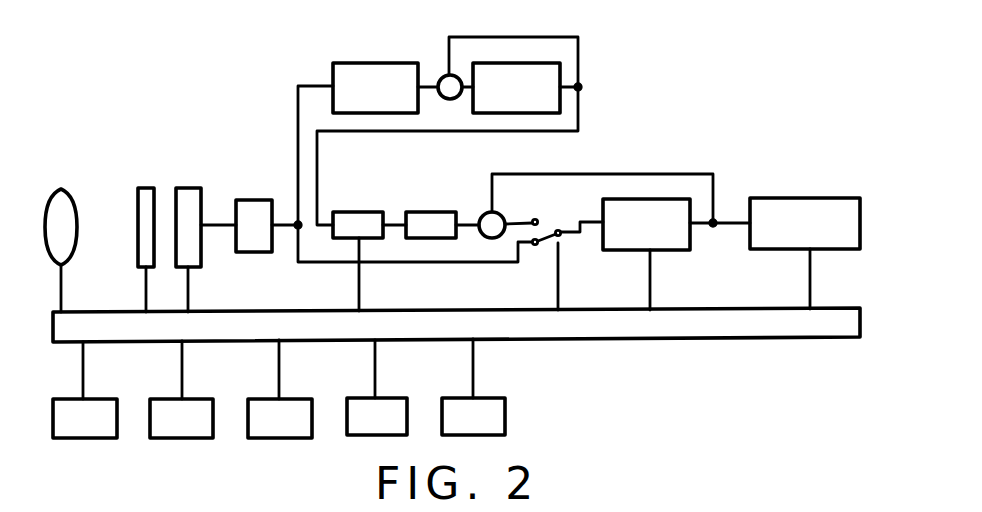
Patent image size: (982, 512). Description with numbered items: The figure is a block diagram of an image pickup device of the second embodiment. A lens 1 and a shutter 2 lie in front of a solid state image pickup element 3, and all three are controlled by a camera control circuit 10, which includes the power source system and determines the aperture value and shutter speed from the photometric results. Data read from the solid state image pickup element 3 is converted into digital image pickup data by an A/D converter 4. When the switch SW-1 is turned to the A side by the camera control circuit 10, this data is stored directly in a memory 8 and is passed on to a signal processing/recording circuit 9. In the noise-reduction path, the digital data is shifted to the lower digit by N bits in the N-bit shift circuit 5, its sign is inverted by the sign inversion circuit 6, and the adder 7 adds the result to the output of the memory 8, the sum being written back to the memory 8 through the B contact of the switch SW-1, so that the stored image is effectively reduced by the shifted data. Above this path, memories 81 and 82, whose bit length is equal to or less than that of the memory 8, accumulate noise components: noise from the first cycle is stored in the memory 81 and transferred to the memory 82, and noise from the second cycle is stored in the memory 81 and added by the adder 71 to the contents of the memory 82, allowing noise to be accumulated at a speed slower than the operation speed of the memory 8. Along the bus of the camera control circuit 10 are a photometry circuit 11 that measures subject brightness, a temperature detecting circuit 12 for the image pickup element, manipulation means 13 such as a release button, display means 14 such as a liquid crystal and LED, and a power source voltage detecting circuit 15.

The lens 1 is at (74, 190).
The shutter 2 is at (149, 188).
The solid state image pickup element 3 is at (191, 188).
The A/D converter 4 is at (262, 200).
The N-bit shift circuit 5 is at (363, 212).
The sign inversion circuit 6 is at (428, 212).
The adder 7 is at (482, 213).
The memory 8 is at (676, 250).
The signal processing/recording circuit 9 is at (803, 198).
The camera control circuit 10 is at (494, 289).
The photometry circuit 11 is at (100, 399).
The temperature detecting circuit 12 is at (195, 399).
The manipulation means 13 is at (292, 399).
The display means 14 is at (390, 398).
The power source voltage detecting circuit 15 is at (488, 398).
The adder 71 is at (440, 76).
The memory 81 is at (368, 63).
The memory 82 is at (562, 72).
The switch SW-1 is at (562, 240).